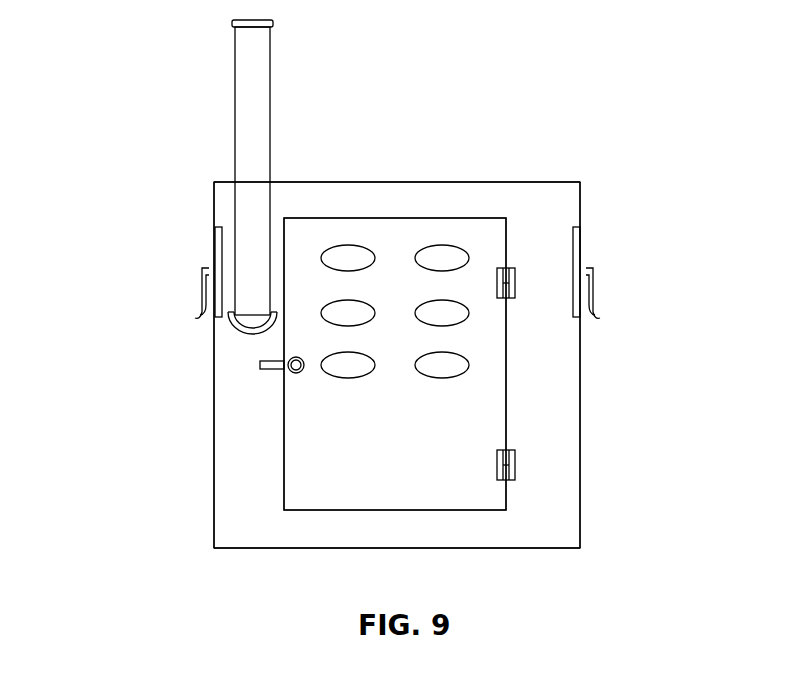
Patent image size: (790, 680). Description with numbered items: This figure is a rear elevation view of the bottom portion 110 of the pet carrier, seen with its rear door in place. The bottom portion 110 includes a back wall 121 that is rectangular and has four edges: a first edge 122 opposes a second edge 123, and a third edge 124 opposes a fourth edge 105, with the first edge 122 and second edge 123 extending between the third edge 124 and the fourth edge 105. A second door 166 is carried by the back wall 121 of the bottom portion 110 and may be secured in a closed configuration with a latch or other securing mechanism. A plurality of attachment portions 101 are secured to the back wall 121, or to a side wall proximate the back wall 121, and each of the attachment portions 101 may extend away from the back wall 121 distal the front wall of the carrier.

The bottom portion 110 is at (128, 308).
The fourth edge 105 is at (505, 181).
The first edge 122 is at (581, 430).
The second edge 123 is at (213, 393).
The third edge 124 is at (297, 548).
The back wall 121 is at (413, 162).
The second door 166 is at (268, 446).
The attachment portions 101 is at (202, 248).